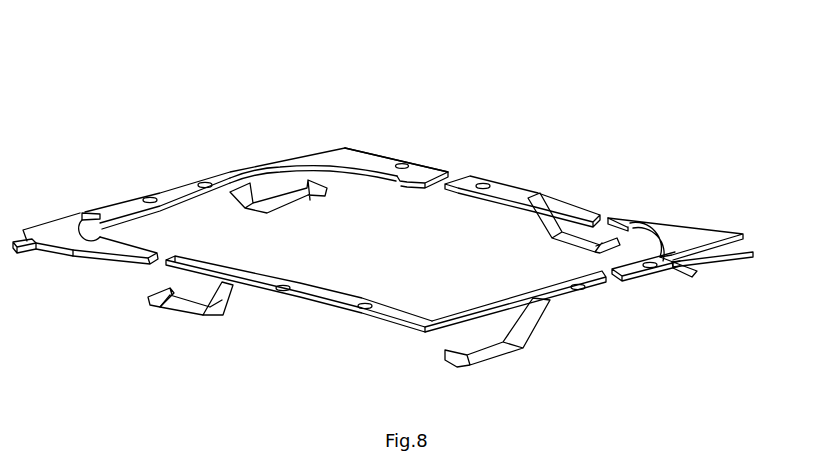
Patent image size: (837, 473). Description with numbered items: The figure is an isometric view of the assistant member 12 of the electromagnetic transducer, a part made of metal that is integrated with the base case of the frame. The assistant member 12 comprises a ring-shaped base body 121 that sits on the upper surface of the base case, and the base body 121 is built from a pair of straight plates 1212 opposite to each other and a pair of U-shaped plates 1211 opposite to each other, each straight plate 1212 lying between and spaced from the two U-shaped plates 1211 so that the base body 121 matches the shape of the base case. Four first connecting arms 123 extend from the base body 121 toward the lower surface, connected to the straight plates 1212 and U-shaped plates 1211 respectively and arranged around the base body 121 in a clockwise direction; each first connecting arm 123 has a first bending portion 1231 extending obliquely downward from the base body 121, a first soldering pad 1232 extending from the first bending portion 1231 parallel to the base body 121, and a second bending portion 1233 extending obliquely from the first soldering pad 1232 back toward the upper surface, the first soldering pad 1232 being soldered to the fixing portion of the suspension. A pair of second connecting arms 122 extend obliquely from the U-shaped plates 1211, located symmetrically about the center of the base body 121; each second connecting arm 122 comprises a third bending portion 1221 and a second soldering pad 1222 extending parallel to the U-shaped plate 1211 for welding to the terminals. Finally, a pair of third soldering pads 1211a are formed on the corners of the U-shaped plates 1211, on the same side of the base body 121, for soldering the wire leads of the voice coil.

The assistant member 12 is at (209, 36).
The base body 121 is at (440, 158).
The U-shaped plate 1211 is at (280, 165).
The third soldering pad 1211a is at (343, 157).
The straight plate 1212 is at (503, 190).
The second connecting arm 122 is at (795, 333).
The third bending portion 1221 is at (695, 270).
The second soldering pad 1222 is at (741, 266).
The first connecting arm 123 is at (265, 396).
The first bending portion 1231 is at (215, 308).
The first soldering pad 1232 is at (173, 306).
The second bending portion 1233 is at (150, 300).